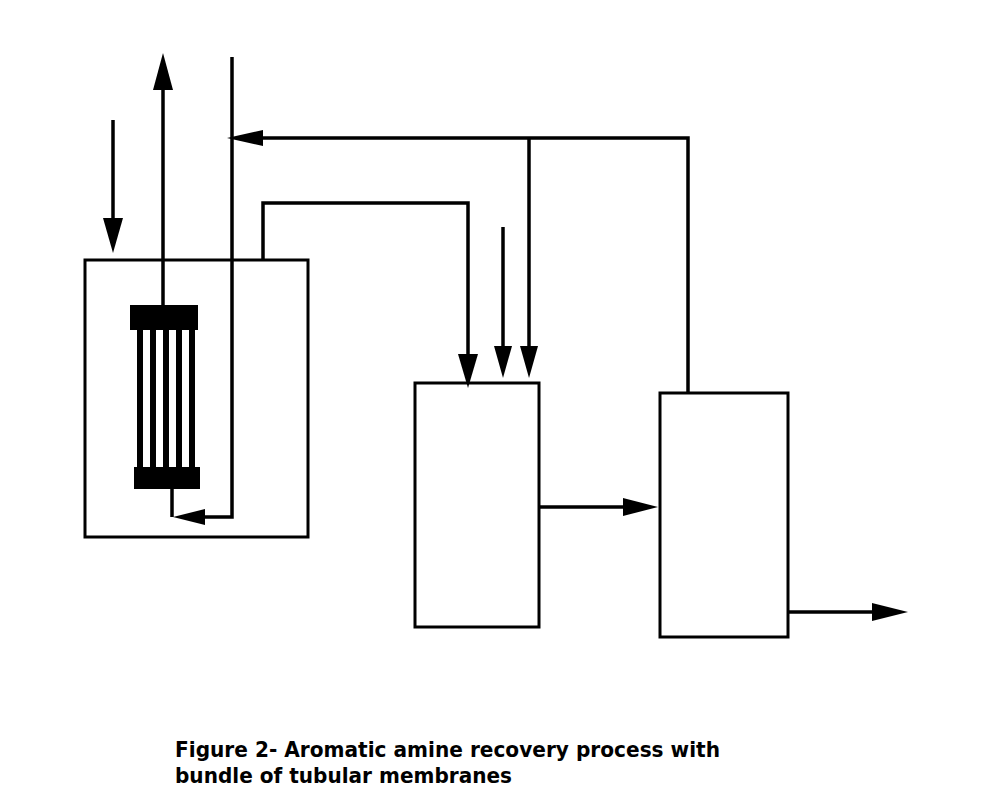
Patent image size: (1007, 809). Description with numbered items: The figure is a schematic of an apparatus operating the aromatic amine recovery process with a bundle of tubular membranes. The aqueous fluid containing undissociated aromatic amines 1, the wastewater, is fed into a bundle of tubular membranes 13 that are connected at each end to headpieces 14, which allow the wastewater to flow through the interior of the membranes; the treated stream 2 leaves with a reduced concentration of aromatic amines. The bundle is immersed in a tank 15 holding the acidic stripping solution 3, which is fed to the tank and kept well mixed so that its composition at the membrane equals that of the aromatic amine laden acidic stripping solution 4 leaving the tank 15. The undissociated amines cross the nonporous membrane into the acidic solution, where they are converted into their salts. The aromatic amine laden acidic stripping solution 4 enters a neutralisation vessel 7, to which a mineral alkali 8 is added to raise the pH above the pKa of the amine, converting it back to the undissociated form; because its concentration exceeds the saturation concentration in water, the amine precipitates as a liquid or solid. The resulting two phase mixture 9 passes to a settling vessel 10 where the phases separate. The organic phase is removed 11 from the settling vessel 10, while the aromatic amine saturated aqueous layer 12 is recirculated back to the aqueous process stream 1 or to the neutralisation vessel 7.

The aqueous fluid containing undissociated aromatic amines 1 is at (210, 276).
The permeate outlet line 2 is at (160, 166).
The acidic stripping solution 3 is at (110, 167).
The aromatic amine laden acidic stripping solution 4 is at (370, 295).
The neutralisation vessel 7 is at (477, 505).
The mineral alkali 8 is at (505, 283).
The two phase mixture 9 is at (598, 490).
The settling vessel 10 is at (724, 515).
The organic phase removal 11 is at (848, 597).
The aromatic amine saturated aqueous layer 12 is at (496, 261).
The bundle of tubular membranes 13 is at (114, 364).
The headpieces 14 is at (111, 455).
The tank 15 is at (196, 398).